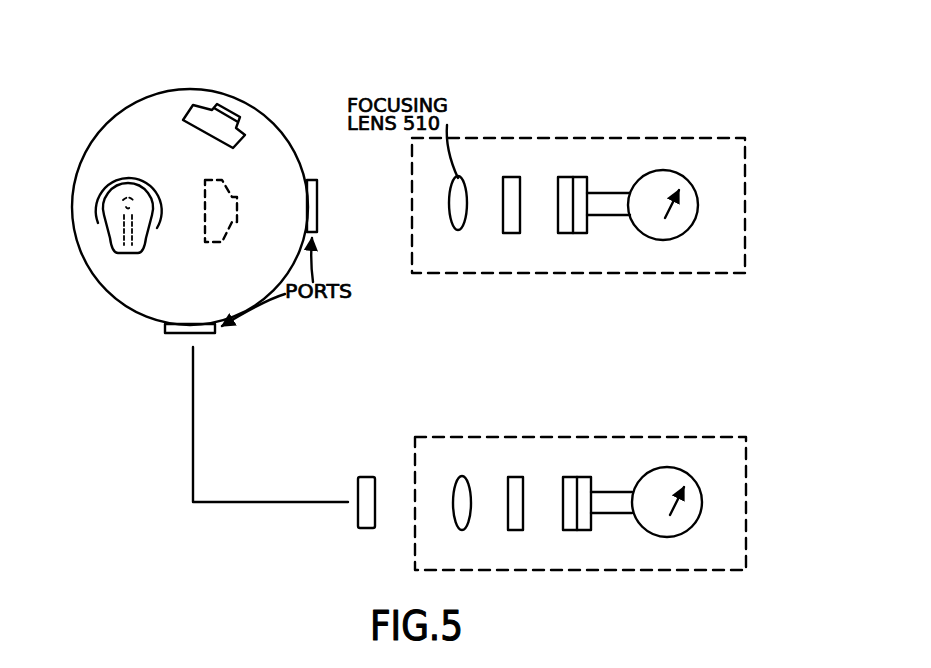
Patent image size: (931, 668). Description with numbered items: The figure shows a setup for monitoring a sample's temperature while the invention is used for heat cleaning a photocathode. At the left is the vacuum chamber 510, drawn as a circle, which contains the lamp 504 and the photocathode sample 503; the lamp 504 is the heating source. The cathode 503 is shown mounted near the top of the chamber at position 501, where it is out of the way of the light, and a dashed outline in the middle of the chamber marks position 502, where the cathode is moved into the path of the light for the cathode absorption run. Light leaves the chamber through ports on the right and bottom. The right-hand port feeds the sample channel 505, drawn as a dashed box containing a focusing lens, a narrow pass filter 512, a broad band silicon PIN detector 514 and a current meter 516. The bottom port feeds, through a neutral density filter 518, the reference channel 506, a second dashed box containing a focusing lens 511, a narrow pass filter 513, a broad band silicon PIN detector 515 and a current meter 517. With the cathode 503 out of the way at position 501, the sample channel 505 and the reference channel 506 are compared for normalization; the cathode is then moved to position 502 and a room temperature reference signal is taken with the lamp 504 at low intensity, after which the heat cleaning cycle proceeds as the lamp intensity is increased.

The out-of-the-way position 501 is at (204, 101).
The light-path position 502 is at (198, 235).
The photocathode sample 503 is at (232, 108).
The lamp 504 is at (117, 235).
The sample channel 505 is at (812, 264).
The reference channel 506 is at (646, 503).
The vacuum chamber 510 is at (123, 110).
The focusing lens 511 is at (462, 478).
The narrow pass filter 0.85 um 512 is at (512, 185).
The narrow pass filter 0.85 um 513 is at (513, 483).
The broad band silicon PIN detector 514 is at (582, 180).
The broad band silicon PIN detector 515 is at (583, 478).
The current meter 516 is at (678, 182).
The current meter 517 is at (683, 478).
The neutral density filter 518 is at (359, 478).